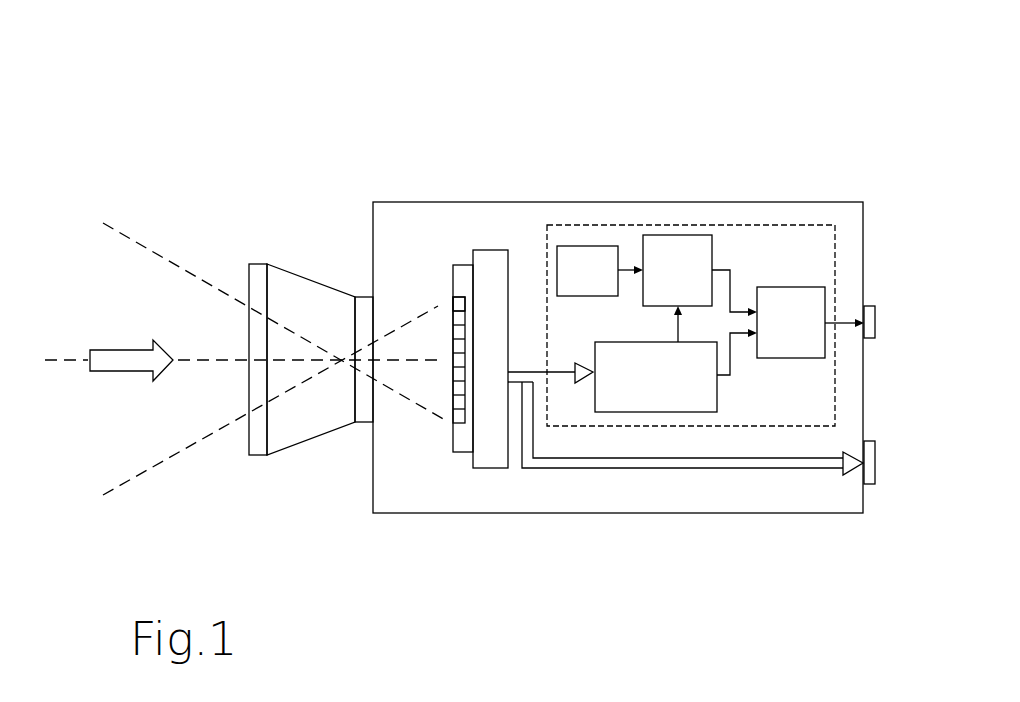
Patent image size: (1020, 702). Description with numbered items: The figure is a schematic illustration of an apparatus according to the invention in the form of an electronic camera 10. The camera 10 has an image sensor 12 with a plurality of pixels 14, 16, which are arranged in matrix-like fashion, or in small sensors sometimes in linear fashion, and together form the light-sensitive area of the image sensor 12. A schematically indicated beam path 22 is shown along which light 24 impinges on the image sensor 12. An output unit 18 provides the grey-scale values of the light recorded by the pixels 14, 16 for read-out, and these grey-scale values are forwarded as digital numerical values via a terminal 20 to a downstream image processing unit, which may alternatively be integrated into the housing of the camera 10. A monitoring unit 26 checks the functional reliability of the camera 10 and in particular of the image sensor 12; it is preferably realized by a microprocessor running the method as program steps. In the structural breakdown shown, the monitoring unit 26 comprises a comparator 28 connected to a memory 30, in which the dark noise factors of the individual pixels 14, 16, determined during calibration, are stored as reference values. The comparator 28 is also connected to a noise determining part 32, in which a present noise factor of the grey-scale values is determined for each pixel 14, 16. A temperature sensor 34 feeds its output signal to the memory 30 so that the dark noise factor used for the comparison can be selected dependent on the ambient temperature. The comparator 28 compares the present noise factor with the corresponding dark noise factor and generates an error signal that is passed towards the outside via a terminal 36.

The camera 10 is at (262, 140).
The image sensor 12 is at (466, 445).
The pixel 14 is at (453, 390).
The pixel 16 is at (452, 318).
The output unit 18 is at (493, 459).
The terminal 20 is at (875, 463).
The beam path 22 is at (168, 258).
The light 24 is at (128, 372).
The monitoring unit 26 is at (837, 383).
The comparator 28 is at (790, 287).
The memory 30 is at (677, 235).
The noise determining part 32 is at (673, 402).
The temperature sensor 34 is at (581, 246).
The terminal 36 is at (875, 317).